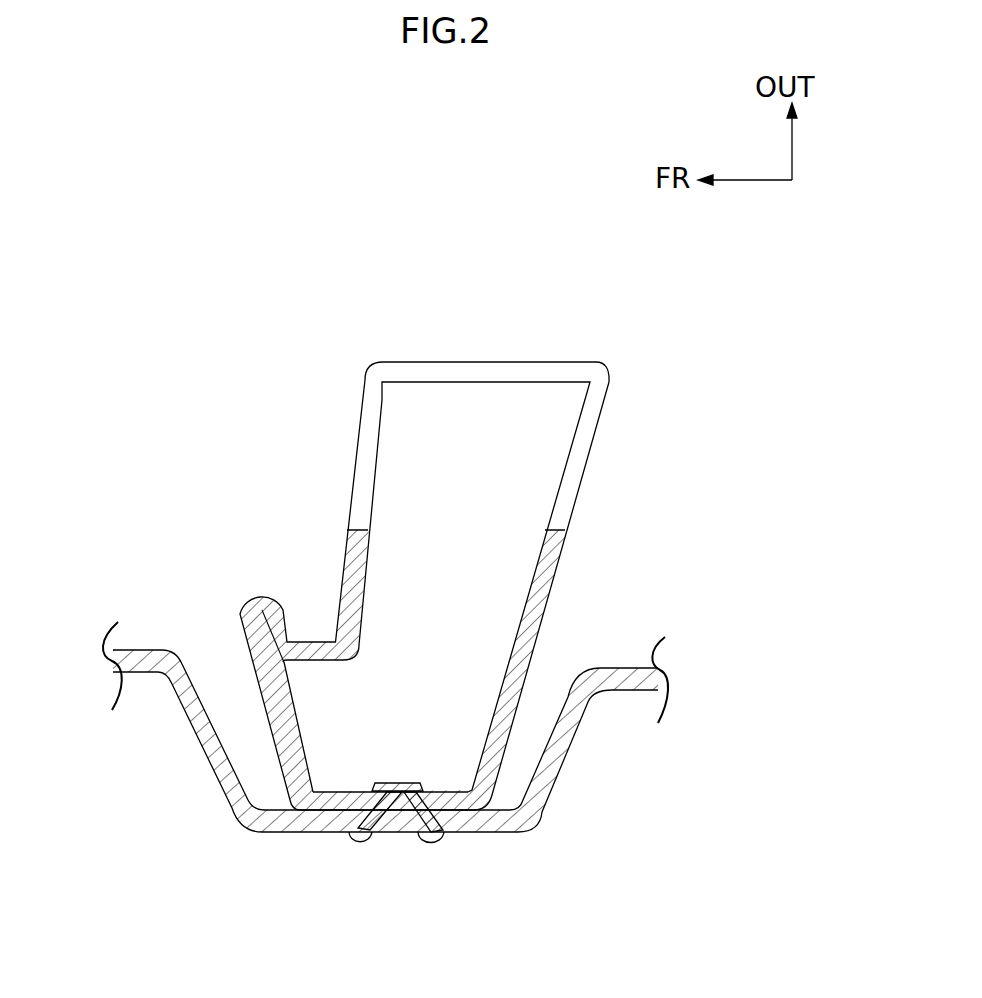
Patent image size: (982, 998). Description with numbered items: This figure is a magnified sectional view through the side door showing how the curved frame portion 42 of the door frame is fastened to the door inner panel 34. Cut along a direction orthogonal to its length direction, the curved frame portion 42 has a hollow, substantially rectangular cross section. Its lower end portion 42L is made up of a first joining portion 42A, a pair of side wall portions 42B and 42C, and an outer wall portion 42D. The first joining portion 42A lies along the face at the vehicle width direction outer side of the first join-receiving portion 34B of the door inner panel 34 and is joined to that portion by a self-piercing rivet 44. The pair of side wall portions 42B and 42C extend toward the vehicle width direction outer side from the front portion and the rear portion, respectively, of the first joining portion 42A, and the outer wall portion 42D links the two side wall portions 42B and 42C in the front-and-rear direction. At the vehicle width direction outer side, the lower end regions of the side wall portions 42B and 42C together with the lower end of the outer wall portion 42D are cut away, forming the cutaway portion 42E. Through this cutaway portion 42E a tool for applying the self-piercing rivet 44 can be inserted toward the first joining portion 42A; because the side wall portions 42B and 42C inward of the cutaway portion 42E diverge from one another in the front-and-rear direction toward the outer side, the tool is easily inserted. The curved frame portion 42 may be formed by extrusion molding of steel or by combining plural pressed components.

The curved frame portion 42 is at (432, 512).
The lower end portion 42L is at (432, 512).
The first joining portion 42A is at (349, 788).
The side wall portion 42B is at (342, 572).
The side wall portion 42C is at (553, 580).
The outer wall portion 42D is at (418, 362).
The cutaway portion 42E is at (357, 522).
The self-piercing rivet 44 is at (405, 780).
The door inner panel 34 is at (385, 793).
The first join-receiving portion 34B is at (298, 833).